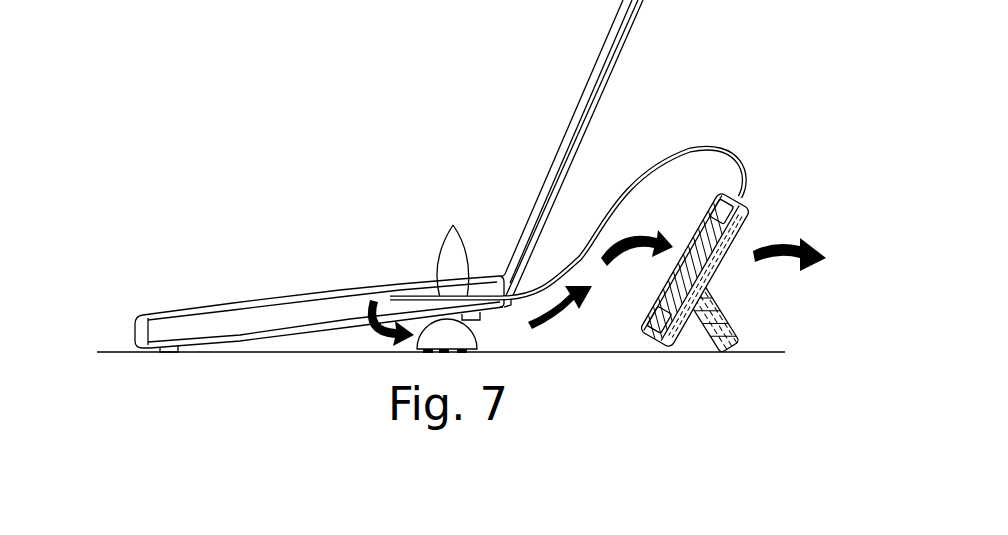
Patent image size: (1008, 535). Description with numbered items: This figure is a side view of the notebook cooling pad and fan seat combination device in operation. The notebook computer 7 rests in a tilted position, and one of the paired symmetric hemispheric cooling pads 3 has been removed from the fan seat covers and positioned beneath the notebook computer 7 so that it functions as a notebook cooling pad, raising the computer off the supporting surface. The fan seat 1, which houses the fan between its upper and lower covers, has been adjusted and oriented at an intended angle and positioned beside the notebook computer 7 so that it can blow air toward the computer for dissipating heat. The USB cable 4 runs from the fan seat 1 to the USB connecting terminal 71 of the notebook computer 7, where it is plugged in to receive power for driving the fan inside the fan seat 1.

The fan seat 1 is at (745, 207).
The hemispheric cooling pad 3 is at (430, 337).
The USB cable 4 is at (704, 150).
The notebook computer 7 is at (261, 312).
The USB connecting terminal 71 is at (453, 250).